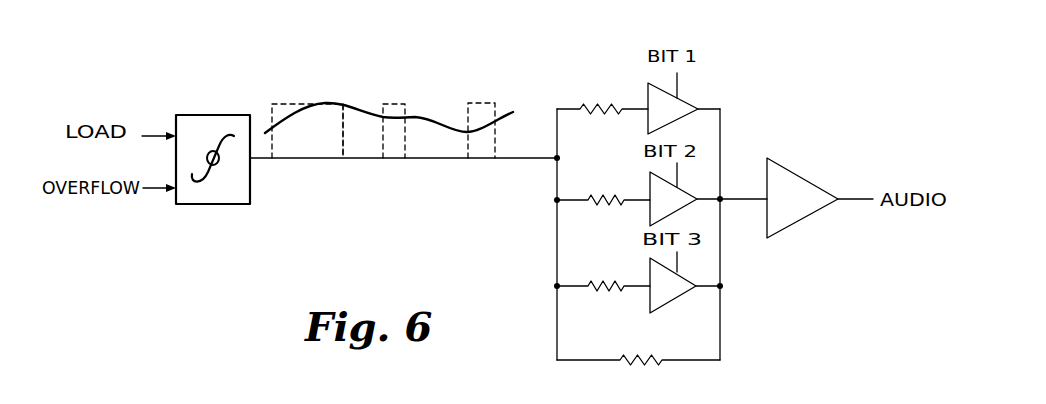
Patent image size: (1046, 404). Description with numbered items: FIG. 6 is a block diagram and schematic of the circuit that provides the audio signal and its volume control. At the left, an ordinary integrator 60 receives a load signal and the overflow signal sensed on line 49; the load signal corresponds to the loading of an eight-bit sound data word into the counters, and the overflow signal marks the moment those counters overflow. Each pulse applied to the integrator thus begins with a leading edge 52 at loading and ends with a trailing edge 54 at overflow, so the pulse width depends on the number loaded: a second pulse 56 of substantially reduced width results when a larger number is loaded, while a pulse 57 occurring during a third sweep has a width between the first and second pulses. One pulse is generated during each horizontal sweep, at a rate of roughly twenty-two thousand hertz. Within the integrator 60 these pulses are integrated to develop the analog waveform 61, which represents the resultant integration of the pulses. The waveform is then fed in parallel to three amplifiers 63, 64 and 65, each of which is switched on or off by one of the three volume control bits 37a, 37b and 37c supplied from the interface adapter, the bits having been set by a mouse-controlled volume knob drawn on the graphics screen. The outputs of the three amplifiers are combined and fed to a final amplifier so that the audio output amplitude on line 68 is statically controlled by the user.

The integrator 60 is at (203, 114).
The overflow line 49 is at (148, 191).
The leading edge 52 is at (272, 104).
The trailing edge 54 is at (353, 110).
The second pulse 56 is at (393, 104).
The pulse 57 is at (479, 103).
The waveform 61 is at (437, 111).
The amplifier 63 is at (648, 122).
The amplifier 64 is at (650, 215).
The amplifier 65 is at (648, 310).
The bit 37a is at (679, 90).
The bit 37b is at (680, 173).
The bit 37c is at (679, 264).
The output line 68 is at (855, 195).